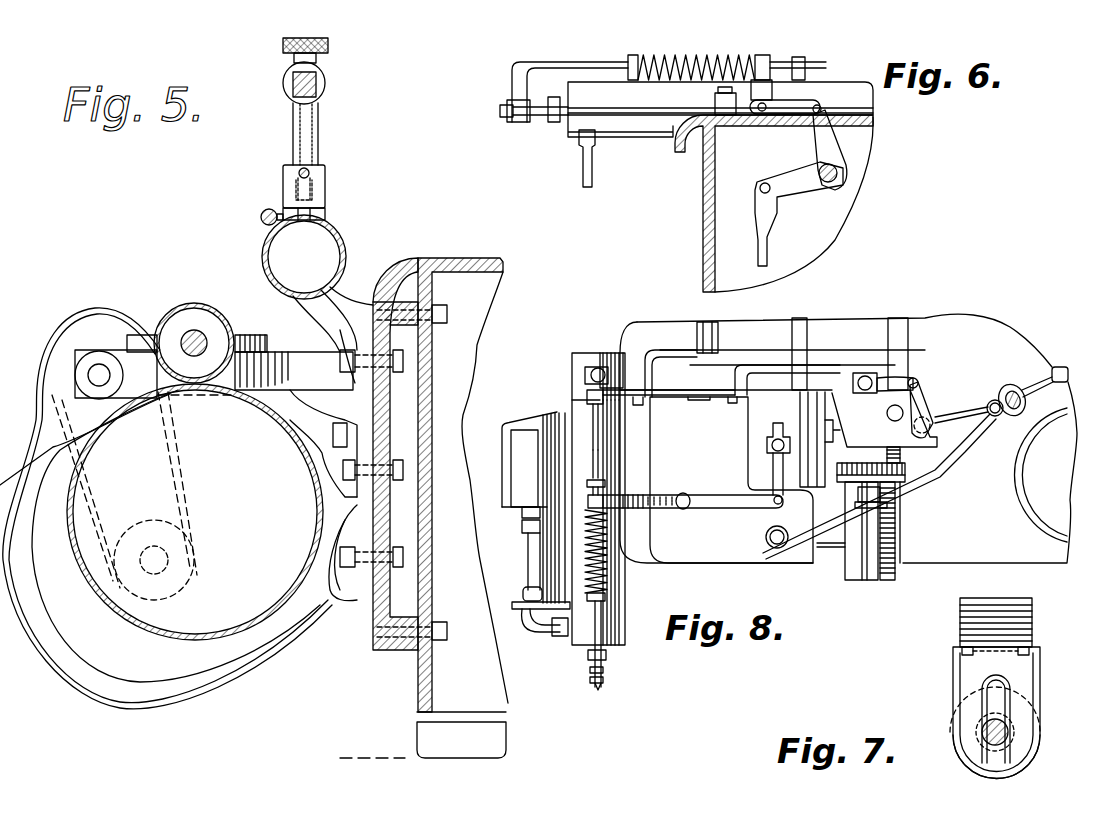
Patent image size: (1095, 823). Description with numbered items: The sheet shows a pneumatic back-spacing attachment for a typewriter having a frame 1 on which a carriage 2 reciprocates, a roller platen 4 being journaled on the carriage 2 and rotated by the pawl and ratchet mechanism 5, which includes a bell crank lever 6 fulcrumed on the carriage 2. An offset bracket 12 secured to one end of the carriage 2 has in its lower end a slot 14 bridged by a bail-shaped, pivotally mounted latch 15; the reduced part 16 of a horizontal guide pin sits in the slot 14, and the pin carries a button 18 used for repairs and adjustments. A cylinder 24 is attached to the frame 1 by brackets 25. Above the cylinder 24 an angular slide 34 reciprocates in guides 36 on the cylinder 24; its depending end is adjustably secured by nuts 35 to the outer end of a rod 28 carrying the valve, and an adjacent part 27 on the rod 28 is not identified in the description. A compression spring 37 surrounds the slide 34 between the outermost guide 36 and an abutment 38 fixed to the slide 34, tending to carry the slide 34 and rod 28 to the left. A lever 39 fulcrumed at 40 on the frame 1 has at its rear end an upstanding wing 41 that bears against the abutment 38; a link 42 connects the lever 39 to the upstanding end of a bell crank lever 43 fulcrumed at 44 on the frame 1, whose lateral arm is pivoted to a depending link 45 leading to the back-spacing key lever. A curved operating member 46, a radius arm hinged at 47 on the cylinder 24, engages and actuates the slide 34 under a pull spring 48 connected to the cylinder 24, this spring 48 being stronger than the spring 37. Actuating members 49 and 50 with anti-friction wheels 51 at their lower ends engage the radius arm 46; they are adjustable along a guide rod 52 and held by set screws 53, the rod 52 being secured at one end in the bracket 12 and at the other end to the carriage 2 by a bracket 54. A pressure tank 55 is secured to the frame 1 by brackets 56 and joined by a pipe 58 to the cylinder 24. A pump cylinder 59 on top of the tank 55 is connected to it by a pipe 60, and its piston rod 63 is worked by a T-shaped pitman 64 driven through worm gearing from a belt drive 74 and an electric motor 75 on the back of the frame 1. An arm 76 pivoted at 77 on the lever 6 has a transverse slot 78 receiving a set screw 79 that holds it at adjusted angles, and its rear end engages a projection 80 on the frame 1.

In FIG. 5, the frame 1 is at (467, 257).
In FIG. 6, the frame 1 is at (878, 183).
In FIG. 8, the frame 1 is at (1007, 324).
In FIG. 8, the carriage 2 is at (813, 322).
In FIG. 8, the roller platen 4 is at (910, 325).
In FIG. 8, the pawl and ratchet mechanism 5 is at (900, 380).
In FIG. 8, the bell crank lever 6 is at (1059, 367).
In FIG. 7, the offset bracket 12 is at (963, 610).
In FIG. 7, the slot 14 is at (1008, 699).
In FIG. 7, the latch 15 is at (957, 670).
In FIG. 7, the reduced part 16 is at (1007, 730).
In FIG. 7, the button 18 is at (1037, 762).
In FIG. 5, the cylinder 24 is at (347, 253).
In FIG. 6, the cylinder 24 is at (653, 135).
In FIG. 8, the cylinder 24 is at (626, 617).
In FIG. 5, the brackets 25 is at (326, 313).
In FIG. 6, the nut 27 is at (553, 122).
In FIG. 8, the nut 27 is at (606, 657).
In FIG. 6, the rod 28 is at (500, 110).
In FIG. 8, the rod 28 is at (597, 688).
In FIG. 5, the angular slide 34 is at (298, 173).
In FIG. 6, the angular slide 34 is at (550, 62).
In FIG. 8, the angular slide 34 is at (603, 633).
In FIG. 6, the nuts 35 is at (513, 122).
In FIG. 8, the nuts 35 is at (604, 679).
In FIG. 6, the guides 36 is at (633, 55).
In FIG. 8, the guides 36 is at (608, 480).
In FIG. 6, the compression spring 37 is at (703, 55).
In FIG. 8, the compression spring 37 is at (605, 548).
In FIG. 6, the abutment 38 is at (760, 55).
In FIG. 8, the abutment 38 is at (588, 503).
In FIG. 6, the lever 39 is at (753, 92).
In FIG. 8, the lever 39 is at (728, 508).
In FIG. 8, the fulcrum 40 is at (690, 497).
In FIG. 6, the upstanding wing 41 is at (773, 57).
In FIG. 8, the upstanding wing 41 is at (587, 500).
In FIG. 6, the link 42 is at (792, 108).
In FIG. 8, the link 42 is at (770, 465).
In FIG. 6, the bell crank lever 43 is at (830, 145).
In FIG. 8, the bell crank lever 43 is at (771, 440).
In FIG. 6, the fulcrum 44 is at (837, 187).
In FIG. 6, the depending link 45 is at (768, 244).
In FIG. 5, the curved operating member 46 is at (325, 177).
In FIG. 5, the hinged mounting 47 is at (326, 213).
In FIG. 5, the pull spring 48 is at (262, 221).
In FIG. 5, the actuating member 49 is at (318, 137).
In FIG. 8, the actuating member 50 is at (585, 373).
In FIG. 5, the anti-friction wheels 51 is at (325, 200).
In FIG. 5, the guide rod 52 is at (326, 82).
In FIG. 8, the guide rod 52 is at (598, 352).
In FIG. 5, the set screws 53 is at (325, 34).
In FIG. 8, the set screws 53 is at (591, 370).
In FIG. 8, the bracket 54 is at (587, 395).
In FIG. 5, the pressure tank 55 is at (96, 443).
In FIG. 8, the pressure tank 55 is at (523, 418).
In FIG. 5, the brackets 56 is at (337, 510).
In FIG. 6, the pipe 58 is at (579, 173).
In FIG. 8, the pipe 58 is at (548, 636).
In FIG. 5, the pump cylinder 59 is at (197, 302).
In FIG. 8, the pump cylinder 59 is at (518, 445).
In FIG. 8, the pipe 60 is at (530, 554).
In FIG. 5, the piston rod 63 is at (185, 336).
In FIG. 5, the T-shaped pitman 64 is at (255, 335).
In FIG. 5, the belt drive 74 is at (50, 342).
In FIG. 5, the motor 75 is at (130, 693).
In FIG. 8, the arm 76 is at (937, 482).
In FIG. 8, the pivot 77 is at (995, 416).
In FIG. 8, the transverse slot 78 is at (1006, 385).
In FIG. 8, the set screw 79 is at (1030, 416).
In FIG. 6, the projection 80 is at (715, 102).
In FIG. 8, the projection 80 is at (782, 533).